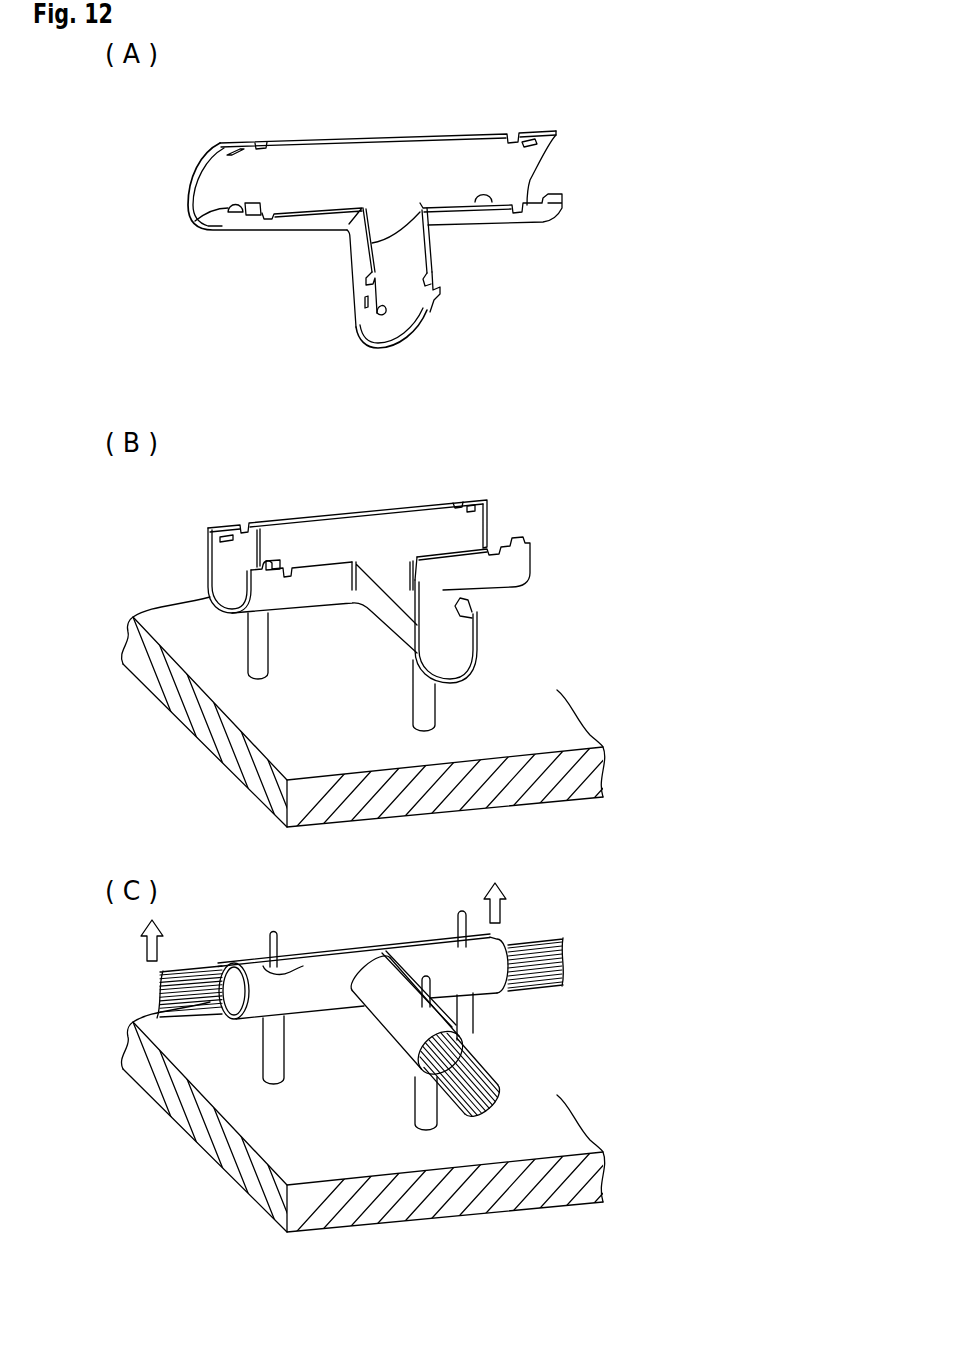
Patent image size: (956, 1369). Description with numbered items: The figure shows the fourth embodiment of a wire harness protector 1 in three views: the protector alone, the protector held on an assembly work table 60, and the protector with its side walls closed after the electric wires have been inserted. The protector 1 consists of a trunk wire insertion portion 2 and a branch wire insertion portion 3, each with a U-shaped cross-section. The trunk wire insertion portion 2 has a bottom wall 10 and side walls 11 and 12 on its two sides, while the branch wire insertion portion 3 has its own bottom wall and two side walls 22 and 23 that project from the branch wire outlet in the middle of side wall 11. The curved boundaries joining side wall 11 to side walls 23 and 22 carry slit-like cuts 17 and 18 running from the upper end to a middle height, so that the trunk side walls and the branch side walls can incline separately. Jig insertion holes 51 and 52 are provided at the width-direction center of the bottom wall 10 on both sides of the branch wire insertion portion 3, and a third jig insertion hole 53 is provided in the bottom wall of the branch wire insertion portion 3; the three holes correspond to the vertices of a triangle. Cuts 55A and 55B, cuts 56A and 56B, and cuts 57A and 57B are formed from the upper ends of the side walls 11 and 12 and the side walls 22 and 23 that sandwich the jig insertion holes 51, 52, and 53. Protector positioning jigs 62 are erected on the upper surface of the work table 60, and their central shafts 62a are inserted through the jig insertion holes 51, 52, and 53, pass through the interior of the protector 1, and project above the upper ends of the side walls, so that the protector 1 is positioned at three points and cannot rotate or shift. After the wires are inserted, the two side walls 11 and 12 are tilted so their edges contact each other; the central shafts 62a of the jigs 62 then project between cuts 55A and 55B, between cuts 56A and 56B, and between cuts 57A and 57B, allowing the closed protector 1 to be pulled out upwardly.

The protector 1 is at (353, 370).
The trunk wire insertion portion 2 is at (188, 200).
The branch wire insertion portion 3 is at (391, 299).
The bottom wall 10 is at (312, 190).
The side wall 11 is at (226, 235).
The side wall 12 is at (214, 150).
The slit-like cut 17 is at (420, 210).
The slit-like cut 18 is at (368, 210).
The side wall 22 is at (432, 318).
The side wall 23 is at (357, 315).
The jig insertion hole 51 is at (193, 228).
The jig insertion hole 52 is at (483, 198).
The jig insertion hole 53 is at (387, 312).
The cut 55A is at (261, 143).
The cut 55B is at (268, 220).
The cut 56A is at (513, 133).
The cut 56B is at (520, 212).
The cut 57A is at (366, 282).
The cut 57B is at (441, 285).
The work table 60 is at (529, 737).
The protector positioning jig 62 is at (465, 1017).
The central shaft 62a is at (467, 533).